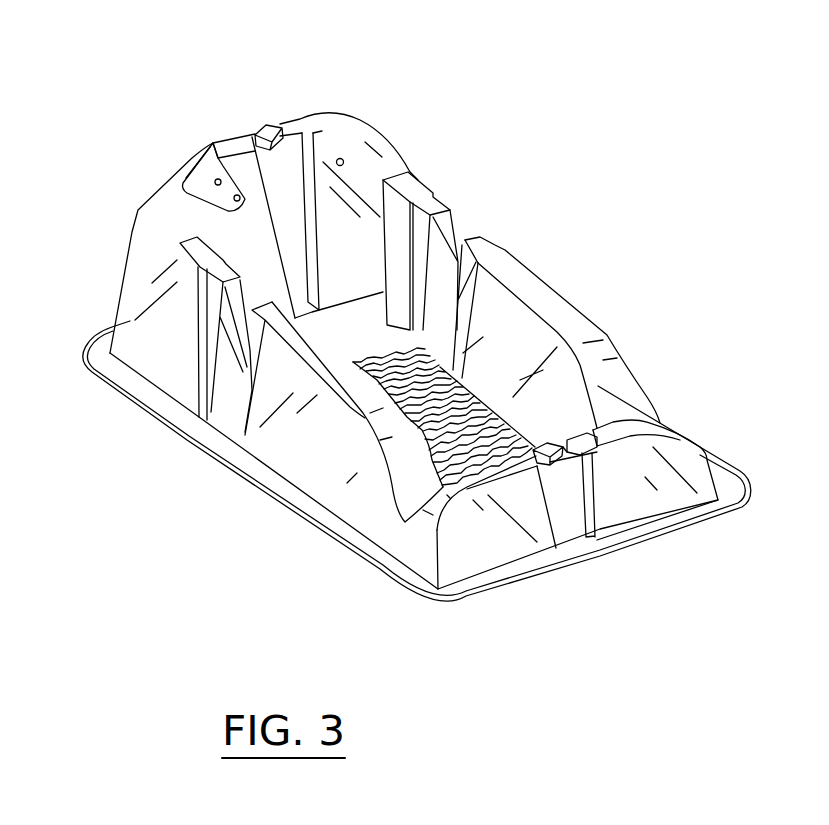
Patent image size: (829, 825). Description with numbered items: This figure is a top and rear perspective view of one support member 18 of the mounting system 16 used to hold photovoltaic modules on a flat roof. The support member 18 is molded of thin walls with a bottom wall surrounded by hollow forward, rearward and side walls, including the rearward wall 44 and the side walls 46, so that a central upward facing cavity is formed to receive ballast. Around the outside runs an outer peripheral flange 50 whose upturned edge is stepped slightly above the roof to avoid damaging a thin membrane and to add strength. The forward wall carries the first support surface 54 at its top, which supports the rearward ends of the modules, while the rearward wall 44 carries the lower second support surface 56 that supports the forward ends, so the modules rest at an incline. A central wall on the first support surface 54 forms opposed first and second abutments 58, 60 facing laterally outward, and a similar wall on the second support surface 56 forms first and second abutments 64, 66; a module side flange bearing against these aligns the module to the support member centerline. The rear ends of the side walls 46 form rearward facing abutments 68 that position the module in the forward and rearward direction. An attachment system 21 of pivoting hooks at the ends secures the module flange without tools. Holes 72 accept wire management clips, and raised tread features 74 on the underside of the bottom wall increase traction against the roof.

The mounting system 16 is at (632, 125).
The support member 18 is at (582, 313).
The attachment system 21 is at (216, 120).
The rearward wall 44 is at (460, 556).
The side wall 46 is at (327, 455).
The outer peripheral flange 50 is at (391, 570).
The first support surface 54 is at (317, 120).
The second support surface 56 is at (632, 432).
The first abutment 58 is at (292, 120).
The second abutment 60 is at (250, 132).
The first abutment 64 is at (562, 447).
The second abutment 66 is at (537, 456).
The rearward facing abutment 68 is at (392, 468).
The hole 72 is at (341, 158).
The raised features 74 is at (443, 367).